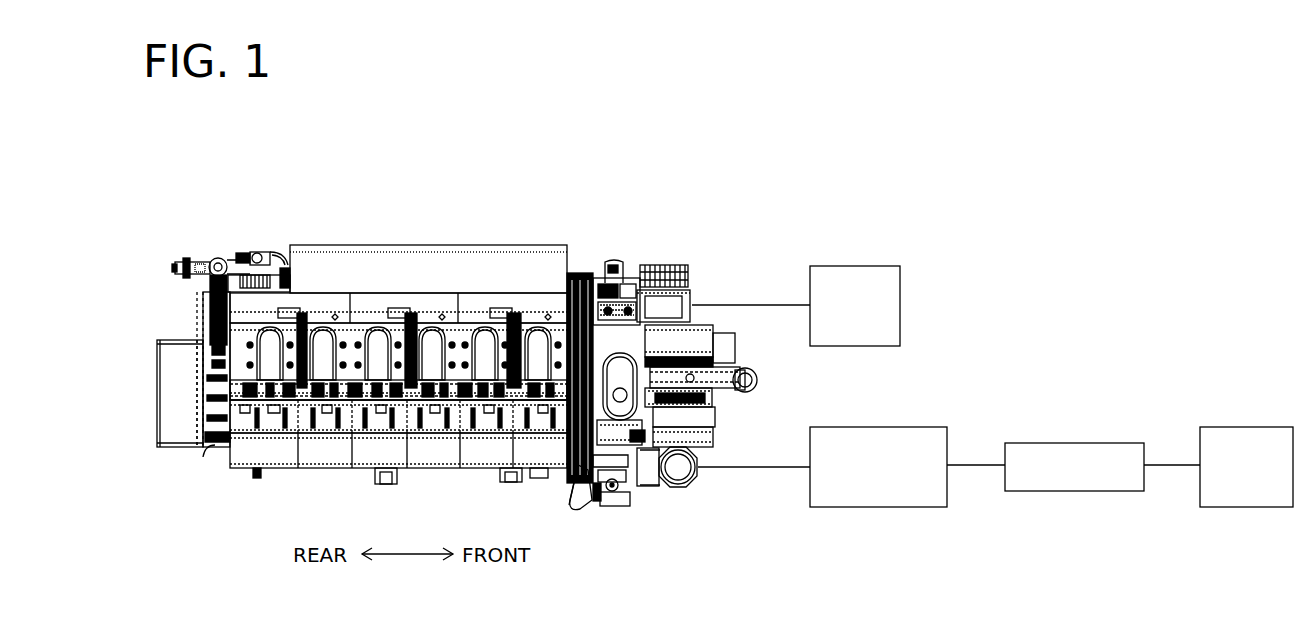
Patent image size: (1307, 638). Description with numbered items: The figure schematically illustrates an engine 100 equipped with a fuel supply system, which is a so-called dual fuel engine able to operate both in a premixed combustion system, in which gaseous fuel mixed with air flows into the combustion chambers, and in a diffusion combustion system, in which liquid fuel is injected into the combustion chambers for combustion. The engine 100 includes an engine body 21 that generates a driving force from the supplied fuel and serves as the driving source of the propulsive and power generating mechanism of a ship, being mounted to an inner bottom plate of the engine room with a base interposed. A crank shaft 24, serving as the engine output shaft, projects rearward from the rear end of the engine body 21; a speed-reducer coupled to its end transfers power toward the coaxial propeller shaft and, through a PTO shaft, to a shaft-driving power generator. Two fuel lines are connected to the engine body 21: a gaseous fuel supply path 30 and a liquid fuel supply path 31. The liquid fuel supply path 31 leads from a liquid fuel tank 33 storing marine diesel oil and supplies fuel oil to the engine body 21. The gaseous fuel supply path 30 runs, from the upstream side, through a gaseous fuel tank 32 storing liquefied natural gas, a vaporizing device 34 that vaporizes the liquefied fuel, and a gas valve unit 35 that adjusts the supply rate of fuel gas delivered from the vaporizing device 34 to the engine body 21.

The engine 100 is at (763, 140).
The engine body 21 is at (440, 225).
The crank shaft 24 is at (188, 437).
The gaseous fuel supply path 30 is at (757, 470).
The liquid fuel supply path 31 is at (748, 301).
The gaseous fuel tank 32 is at (1248, 508).
The liquid fuel tank 33 is at (852, 265).
The vaporizing device 34 is at (1075, 491).
The gas valve unit 35 is at (878, 508).